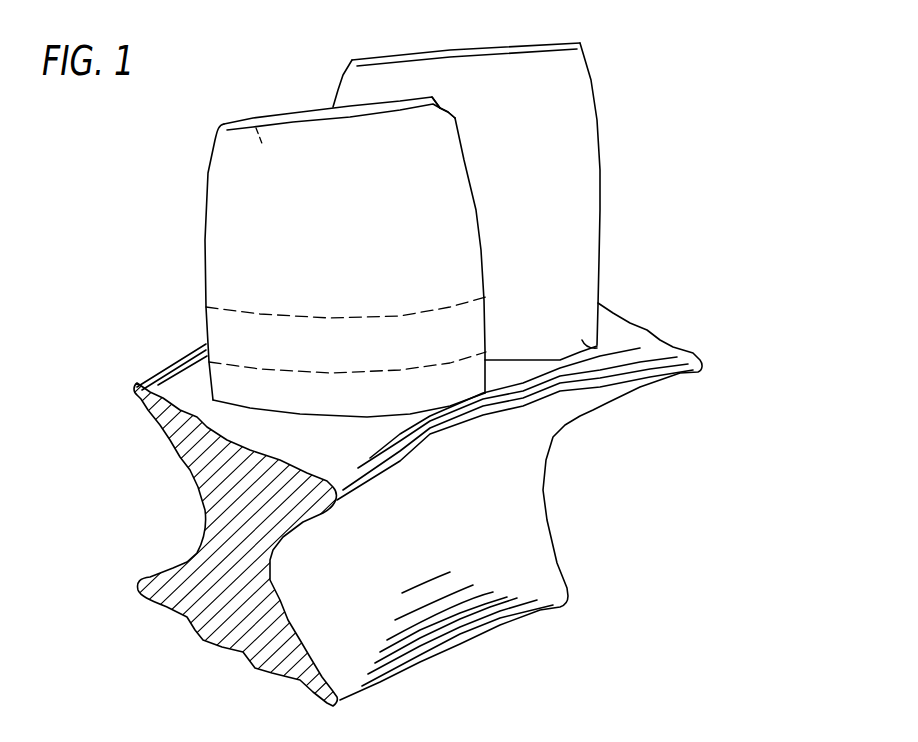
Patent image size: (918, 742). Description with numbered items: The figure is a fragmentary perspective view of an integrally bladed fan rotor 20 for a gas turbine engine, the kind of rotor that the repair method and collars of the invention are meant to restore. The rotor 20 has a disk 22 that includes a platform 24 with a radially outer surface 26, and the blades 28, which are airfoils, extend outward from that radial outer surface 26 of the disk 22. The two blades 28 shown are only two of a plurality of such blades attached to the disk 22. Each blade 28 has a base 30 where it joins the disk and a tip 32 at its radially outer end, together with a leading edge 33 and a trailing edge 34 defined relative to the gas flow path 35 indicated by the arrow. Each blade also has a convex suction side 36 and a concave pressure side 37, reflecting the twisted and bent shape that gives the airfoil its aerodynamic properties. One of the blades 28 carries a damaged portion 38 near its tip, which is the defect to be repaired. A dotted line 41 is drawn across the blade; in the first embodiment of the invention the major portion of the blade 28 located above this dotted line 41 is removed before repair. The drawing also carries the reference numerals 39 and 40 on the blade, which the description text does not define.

The integrally bladed fan rotor 20 is at (682, 258).
The disk 22 is at (477, 648).
The platform 24 is at (450, 433).
The radially outer surface 26 is at (337, 478).
The blades 28 is at (346, 60).
The base 30 is at (607, 352).
The tip 32 is at (420, 62).
The leading edge 33 is at (483, 209).
The trailing edge 34 is at (335, 107).
The gas flow path 35 is at (678, 493).
The suction side 36 is at (240, 262).
The pressure side 37 is at (255, 121).
The damaged portion 38 is at (450, 115).
The upper boundary line 39 is at (353, 318).
The wear level 40 is at (207, 315).
The dotted line 41 is at (290, 370).